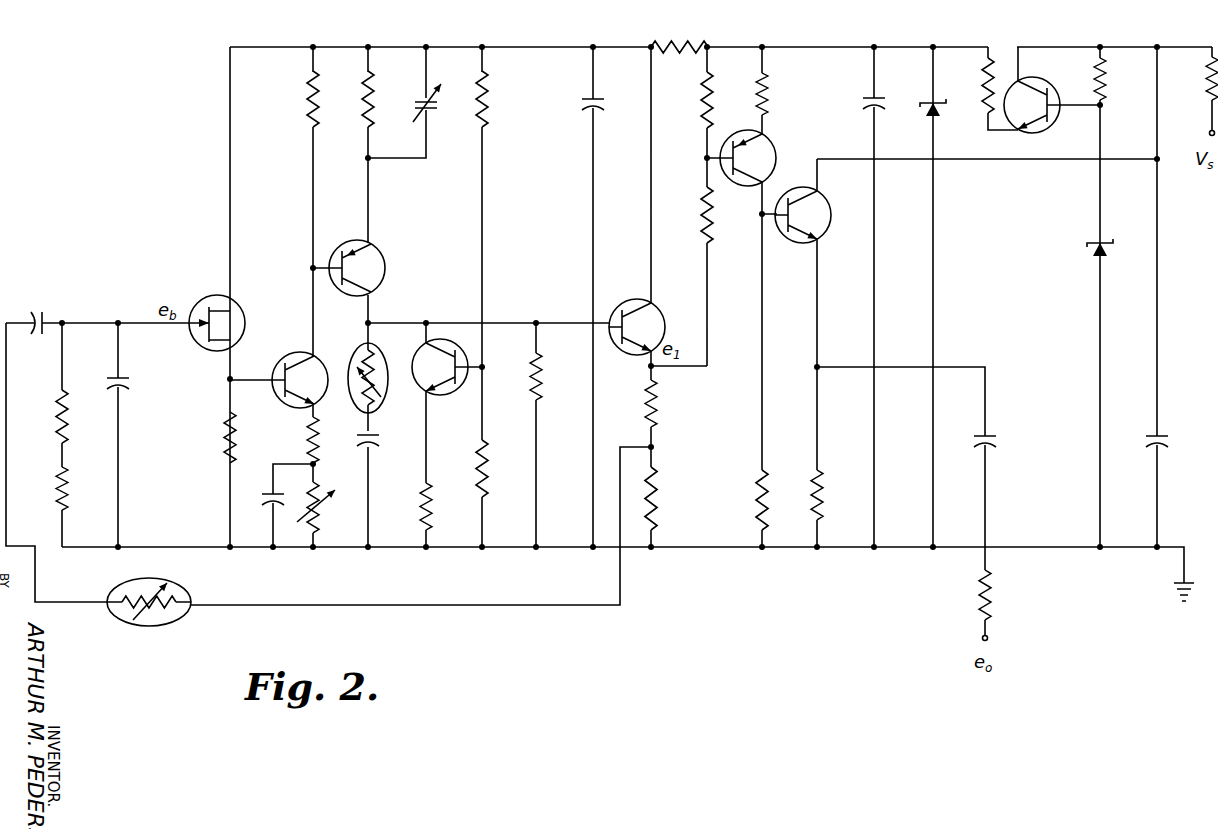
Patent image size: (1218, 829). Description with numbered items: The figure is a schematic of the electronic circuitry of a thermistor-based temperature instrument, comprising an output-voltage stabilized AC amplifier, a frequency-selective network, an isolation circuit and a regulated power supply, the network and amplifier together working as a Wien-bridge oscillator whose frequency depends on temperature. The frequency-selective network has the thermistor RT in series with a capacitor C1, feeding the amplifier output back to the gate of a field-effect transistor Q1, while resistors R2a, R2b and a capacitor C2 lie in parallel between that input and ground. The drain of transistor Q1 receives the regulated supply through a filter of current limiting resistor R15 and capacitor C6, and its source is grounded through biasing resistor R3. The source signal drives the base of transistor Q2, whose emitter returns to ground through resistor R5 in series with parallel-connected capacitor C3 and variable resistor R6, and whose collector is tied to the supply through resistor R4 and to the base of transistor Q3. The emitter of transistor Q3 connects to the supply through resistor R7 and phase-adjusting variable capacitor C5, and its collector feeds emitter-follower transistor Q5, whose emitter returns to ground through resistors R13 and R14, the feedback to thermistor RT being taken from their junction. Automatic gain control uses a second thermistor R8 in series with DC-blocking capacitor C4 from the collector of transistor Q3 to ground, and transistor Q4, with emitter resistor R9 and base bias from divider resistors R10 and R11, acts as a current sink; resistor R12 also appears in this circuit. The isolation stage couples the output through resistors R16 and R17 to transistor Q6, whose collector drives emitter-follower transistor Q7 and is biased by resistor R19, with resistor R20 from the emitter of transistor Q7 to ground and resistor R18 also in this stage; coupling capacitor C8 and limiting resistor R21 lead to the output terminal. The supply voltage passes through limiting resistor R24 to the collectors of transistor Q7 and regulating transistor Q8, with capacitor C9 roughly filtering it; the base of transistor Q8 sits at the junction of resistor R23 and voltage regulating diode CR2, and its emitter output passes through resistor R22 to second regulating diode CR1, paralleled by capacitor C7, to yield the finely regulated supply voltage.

The capacitor C1 is at (40, 312).
The field-effect transistor Q1 is at (218, 296).
The resistor R2a is at (68, 420).
The resistor R2b is at (68, 495).
The capacitor C2 is at (128, 386).
The biasing resistor R3 is at (226, 438).
The transistor Q2 is at (290, 356).
The resistor R5 is at (308, 430).
The capacitor C3 is at (268, 500).
The variable resistor R6 is at (328, 518).
The transistor Q3 is at (383, 256).
The resistor R4 is at (311, 107).
The resistor R7 is at (362, 92).
The phase-adjusting variable capacitor C5 is at (418, 102).
The second thermistor R8 is at (375, 358).
The DC-blocking capacitor C4 is at (385, 440).
The transistor Q4 is at (428, 395).
The resistor R9 is at (420, 512).
The resistor R10 is at (488, 106).
The resistor R11 is at (478, 490).
The resistor R12 is at (542, 368).
The capacitor C6 is at (582, 104).
The transistor Q5 is at (618, 303).
The resistor R13 is at (660, 412).
The resistor R14 is at (660, 503).
The current limiting resistor R15 is at (690, 28).
The resistor R16 is at (703, 110).
The resistor R17 is at (703, 215).
The resistor R18 is at (768, 95).
The transistor Q6 is at (777, 146).
The transistor Q7 is at (798, 250).
The biasing resistor R19 is at (758, 492).
The resistor R20 is at (822, 495).
The capacitor C7 is at (866, 104).
The second regulating diode CR1 is at (928, 99).
The resistor R22 is at (986, 90).
The regulating transistor Q8 is at (1057, 90).
The resistor R23 is at (1106, 80).
The limiting resistor R24 is at (1206, 95).
The voltage regulating diode CR2 is at (1092, 242).
The coupling capacitor C8 is at (996, 444).
The capacitor C9 is at (1148, 446).
The limiting resistor R21 is at (1000, 598).
The thermistor RT is at (138, 625).